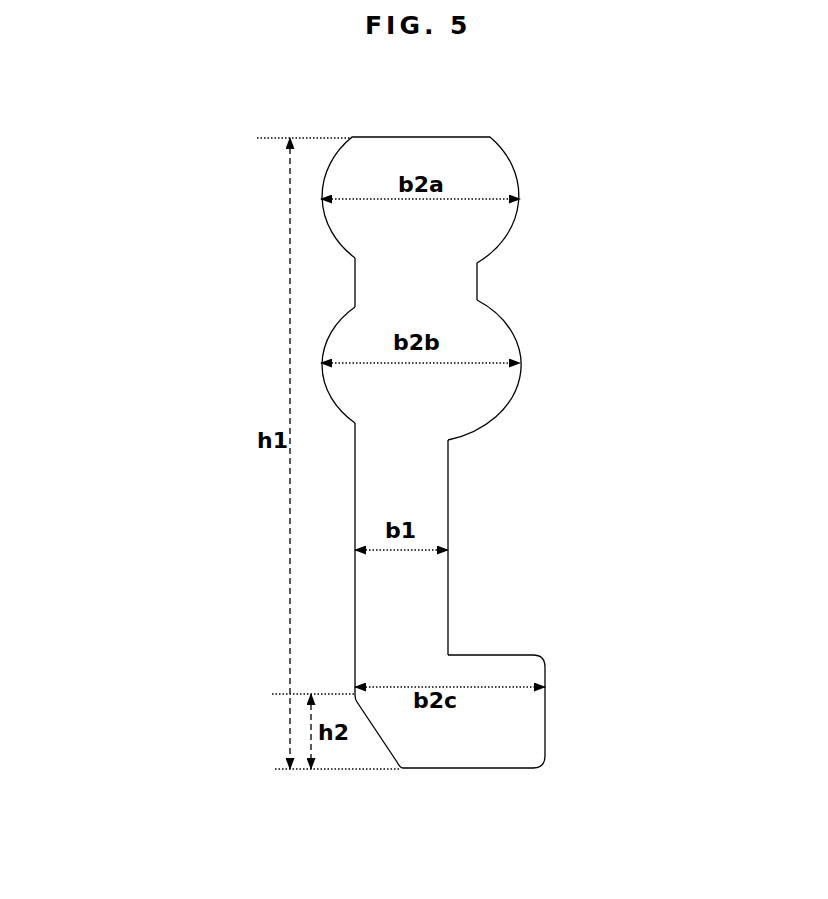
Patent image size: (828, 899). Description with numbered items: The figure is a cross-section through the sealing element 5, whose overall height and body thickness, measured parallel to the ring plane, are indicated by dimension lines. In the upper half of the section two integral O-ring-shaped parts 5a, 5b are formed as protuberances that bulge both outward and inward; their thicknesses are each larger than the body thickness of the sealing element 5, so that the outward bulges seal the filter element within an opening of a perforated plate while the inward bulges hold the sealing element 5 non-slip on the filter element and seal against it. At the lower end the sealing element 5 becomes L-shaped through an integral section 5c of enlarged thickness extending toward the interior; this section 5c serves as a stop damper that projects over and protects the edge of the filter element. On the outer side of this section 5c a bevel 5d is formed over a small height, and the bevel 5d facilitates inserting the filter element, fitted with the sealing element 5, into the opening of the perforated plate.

The sealing element 5 is at (248, 302).
The O-ring-shaped part 5a is at (491, 213).
The O-ring-shaped part 5b is at (486, 379).
The section 5c is at (506, 705).
The bevel 5d is at (377, 729).